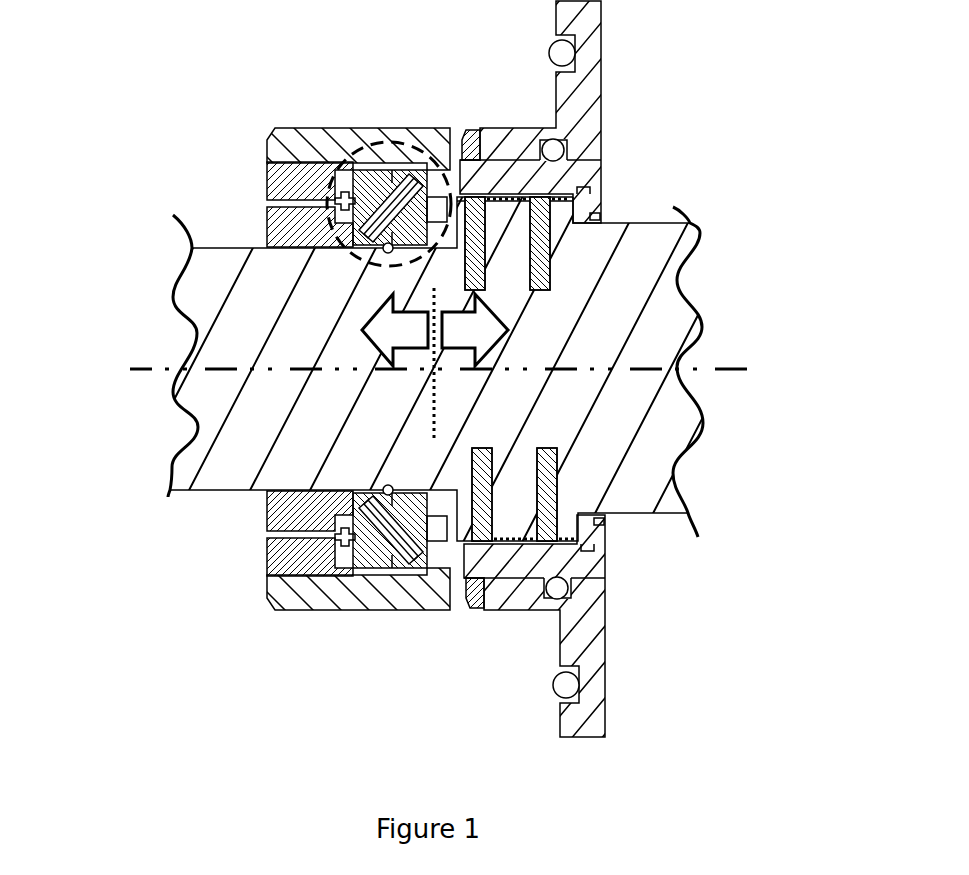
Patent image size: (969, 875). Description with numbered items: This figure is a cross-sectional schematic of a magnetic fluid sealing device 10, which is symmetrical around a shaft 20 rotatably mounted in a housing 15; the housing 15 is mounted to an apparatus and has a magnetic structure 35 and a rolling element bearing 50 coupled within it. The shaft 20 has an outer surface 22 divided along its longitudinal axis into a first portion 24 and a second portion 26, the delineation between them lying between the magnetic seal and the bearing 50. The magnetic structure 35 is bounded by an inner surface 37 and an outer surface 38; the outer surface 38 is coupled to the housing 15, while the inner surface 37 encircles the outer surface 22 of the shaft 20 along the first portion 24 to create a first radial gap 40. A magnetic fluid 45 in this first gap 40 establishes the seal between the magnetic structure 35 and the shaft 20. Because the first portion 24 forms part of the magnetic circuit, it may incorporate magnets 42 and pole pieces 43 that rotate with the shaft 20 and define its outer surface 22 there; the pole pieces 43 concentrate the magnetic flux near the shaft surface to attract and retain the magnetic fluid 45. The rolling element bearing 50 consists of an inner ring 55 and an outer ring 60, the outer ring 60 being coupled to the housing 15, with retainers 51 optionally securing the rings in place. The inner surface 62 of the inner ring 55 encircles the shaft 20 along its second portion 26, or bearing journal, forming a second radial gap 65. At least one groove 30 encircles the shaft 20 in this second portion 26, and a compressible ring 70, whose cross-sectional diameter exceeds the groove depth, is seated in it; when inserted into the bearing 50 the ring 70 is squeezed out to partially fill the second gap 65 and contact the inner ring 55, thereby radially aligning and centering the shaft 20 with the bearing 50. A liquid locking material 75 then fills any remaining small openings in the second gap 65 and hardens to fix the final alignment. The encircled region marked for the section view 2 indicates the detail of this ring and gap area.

The magnetic fluid sealing device 10 is at (433, 370).
The housing 15 is at (583, 100).
The shaft 20 is at (653, 393).
The outer surface 22 is at (653, 223).
The first portion 24 is at (475, 330).
The second portion 26 is at (395, 330).
The groove 30 is at (400, 252).
The magnetic structure 35 is at (448, 146).
The inner surface 37 is at (441, 546).
The outer surface 38 is at (607, 563).
The first radial gap 40 is at (598, 196).
The magnets 42 is at (600, 517).
The pole pieces 43 is at (560, 208).
The magnetic fluid 45 is at (550, 195).
The rolling element bearing 50 is at (339, 132).
The retainers 51 is at (338, 598).
The inner ring 55 is at (293, 177).
The outer ring 60 is at (352, 168).
The inner surface 62 is at (450, 484).
The second radial gap 65 is at (275, 513).
The compressible ring 70 is at (393, 548).
The liquid locking material 75 is at (366, 512).
The section view 2(ABC) 2 is at (389, 140).